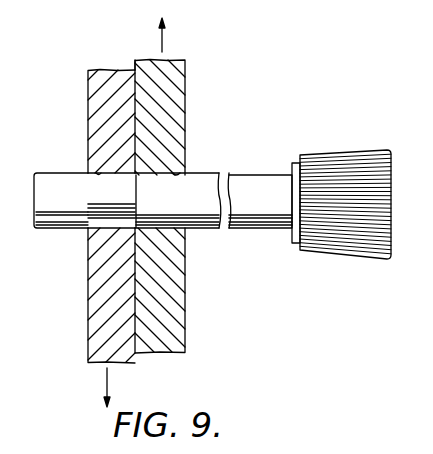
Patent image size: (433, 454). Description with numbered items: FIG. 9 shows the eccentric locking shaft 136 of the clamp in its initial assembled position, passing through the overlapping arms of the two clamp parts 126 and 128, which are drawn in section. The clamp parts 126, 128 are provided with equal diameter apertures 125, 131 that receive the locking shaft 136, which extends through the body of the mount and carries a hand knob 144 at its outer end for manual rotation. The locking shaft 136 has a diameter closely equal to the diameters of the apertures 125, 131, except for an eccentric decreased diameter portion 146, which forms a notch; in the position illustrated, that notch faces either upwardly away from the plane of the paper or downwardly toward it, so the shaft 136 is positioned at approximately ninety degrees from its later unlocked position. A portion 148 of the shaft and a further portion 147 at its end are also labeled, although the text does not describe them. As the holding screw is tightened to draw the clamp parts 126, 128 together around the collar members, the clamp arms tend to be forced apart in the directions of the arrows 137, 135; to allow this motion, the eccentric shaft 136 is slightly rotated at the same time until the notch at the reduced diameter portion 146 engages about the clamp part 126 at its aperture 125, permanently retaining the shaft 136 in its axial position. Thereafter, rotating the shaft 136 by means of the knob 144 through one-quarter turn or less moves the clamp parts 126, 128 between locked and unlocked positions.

The clamp part 126 is at (93, 104).
The clamp part 128 is at (185, 94).
The aperture 125 is at (98, 173).
The aperture 131 is at (178, 173).
The arrow 137 is at (162, 47).
The arrow 135 is at (107, 381).
The eccentric decreased diameter portion 146 is at (121, 199).
The shaft portion 148 is at (175, 204).
The eccentric locking shaft 136 is at (270, 207).
The shaft end 147 is at (50, 231).
The hand knob 144 is at (343, 150).